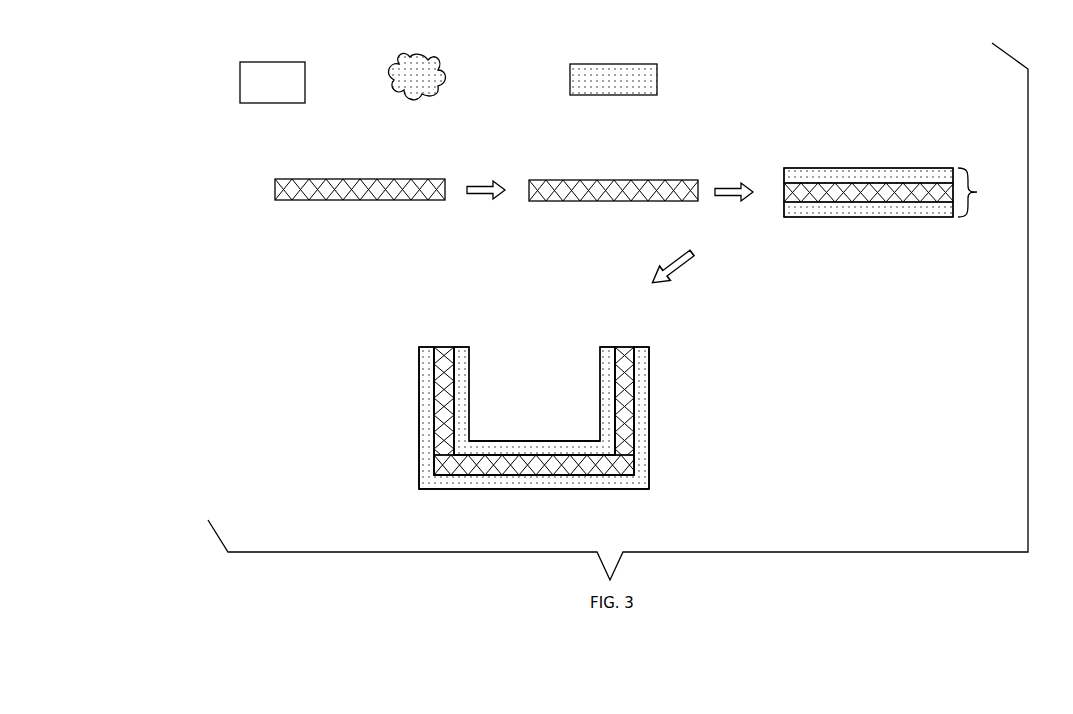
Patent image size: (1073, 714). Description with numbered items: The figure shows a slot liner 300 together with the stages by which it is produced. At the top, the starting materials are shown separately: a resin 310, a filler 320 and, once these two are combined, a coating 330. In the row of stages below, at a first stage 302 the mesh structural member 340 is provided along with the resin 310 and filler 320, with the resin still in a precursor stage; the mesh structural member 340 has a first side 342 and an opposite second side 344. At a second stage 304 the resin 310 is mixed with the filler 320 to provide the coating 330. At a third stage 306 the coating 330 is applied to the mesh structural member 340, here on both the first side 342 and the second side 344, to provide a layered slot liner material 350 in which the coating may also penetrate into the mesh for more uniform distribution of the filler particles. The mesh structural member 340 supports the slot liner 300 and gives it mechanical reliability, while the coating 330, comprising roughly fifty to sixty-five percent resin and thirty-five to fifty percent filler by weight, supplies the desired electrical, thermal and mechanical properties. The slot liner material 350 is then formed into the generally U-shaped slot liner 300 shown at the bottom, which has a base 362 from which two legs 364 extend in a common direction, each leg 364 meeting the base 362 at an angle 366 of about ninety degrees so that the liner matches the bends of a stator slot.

The slot liner 300 is at (366, 484).
The first stage 302 is at (292, 235).
The second stage 304 is at (575, 237).
The third stage 306 is at (845, 243).
The resin 310 is at (240, 80).
The filler 320 is at (393, 88).
The coating 330 is at (570, 78).
The mesh structural member 340 is at (275, 187).
The first side 342 is at (360, 201).
The second side 344 is at (330, 178).
The slot liner material 350 is at (977, 192).
The base 362 is at (534, 490).
The legs 364 is at (419, 377).
The angle 366 is at (471, 441).